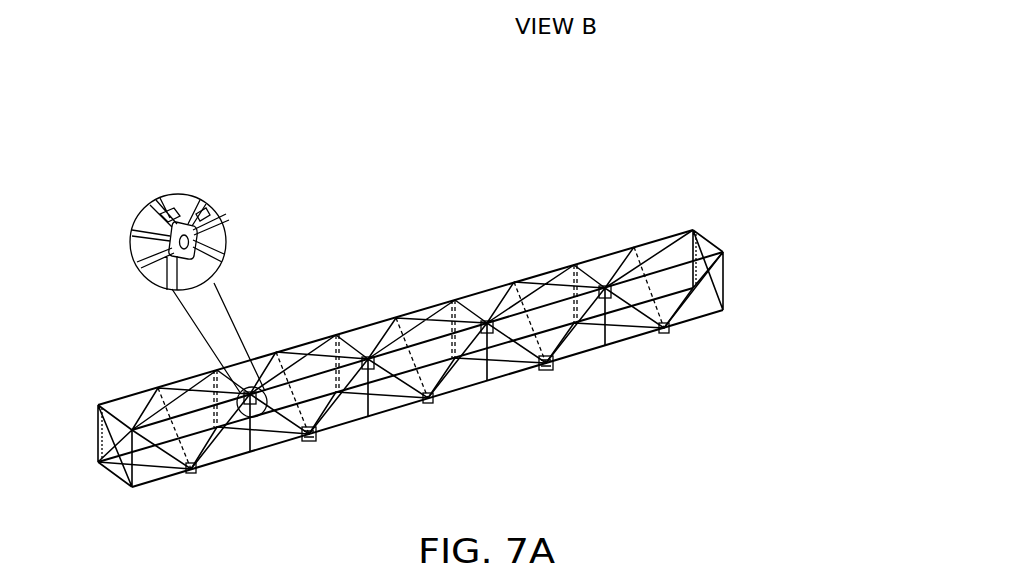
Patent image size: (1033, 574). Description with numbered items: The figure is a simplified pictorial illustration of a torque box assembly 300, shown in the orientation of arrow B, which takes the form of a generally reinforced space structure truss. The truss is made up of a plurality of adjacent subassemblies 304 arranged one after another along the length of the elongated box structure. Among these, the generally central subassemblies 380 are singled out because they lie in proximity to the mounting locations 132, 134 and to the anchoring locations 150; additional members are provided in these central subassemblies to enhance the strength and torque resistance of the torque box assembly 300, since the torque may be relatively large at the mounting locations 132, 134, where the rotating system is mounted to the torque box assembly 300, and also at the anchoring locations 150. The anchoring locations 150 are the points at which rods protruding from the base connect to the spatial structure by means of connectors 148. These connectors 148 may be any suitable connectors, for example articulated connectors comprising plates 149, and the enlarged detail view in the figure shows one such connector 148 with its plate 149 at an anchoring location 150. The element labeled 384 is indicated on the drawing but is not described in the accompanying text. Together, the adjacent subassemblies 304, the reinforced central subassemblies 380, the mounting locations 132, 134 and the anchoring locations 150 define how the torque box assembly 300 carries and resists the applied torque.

The torque box assembly 300 is at (294, 97).
The subassembly 304 is at (184, 505).
The central subassembly 380 is at (277, 278).
The end frame 384 is at (114, 343).
The anchoring location 150 is at (150, 212).
The plate 149 is at (167, 207).
The connector 148 is at (202, 216).
The mounting location 132 is at (311, 445).
The mounting location 134 is at (547, 372).